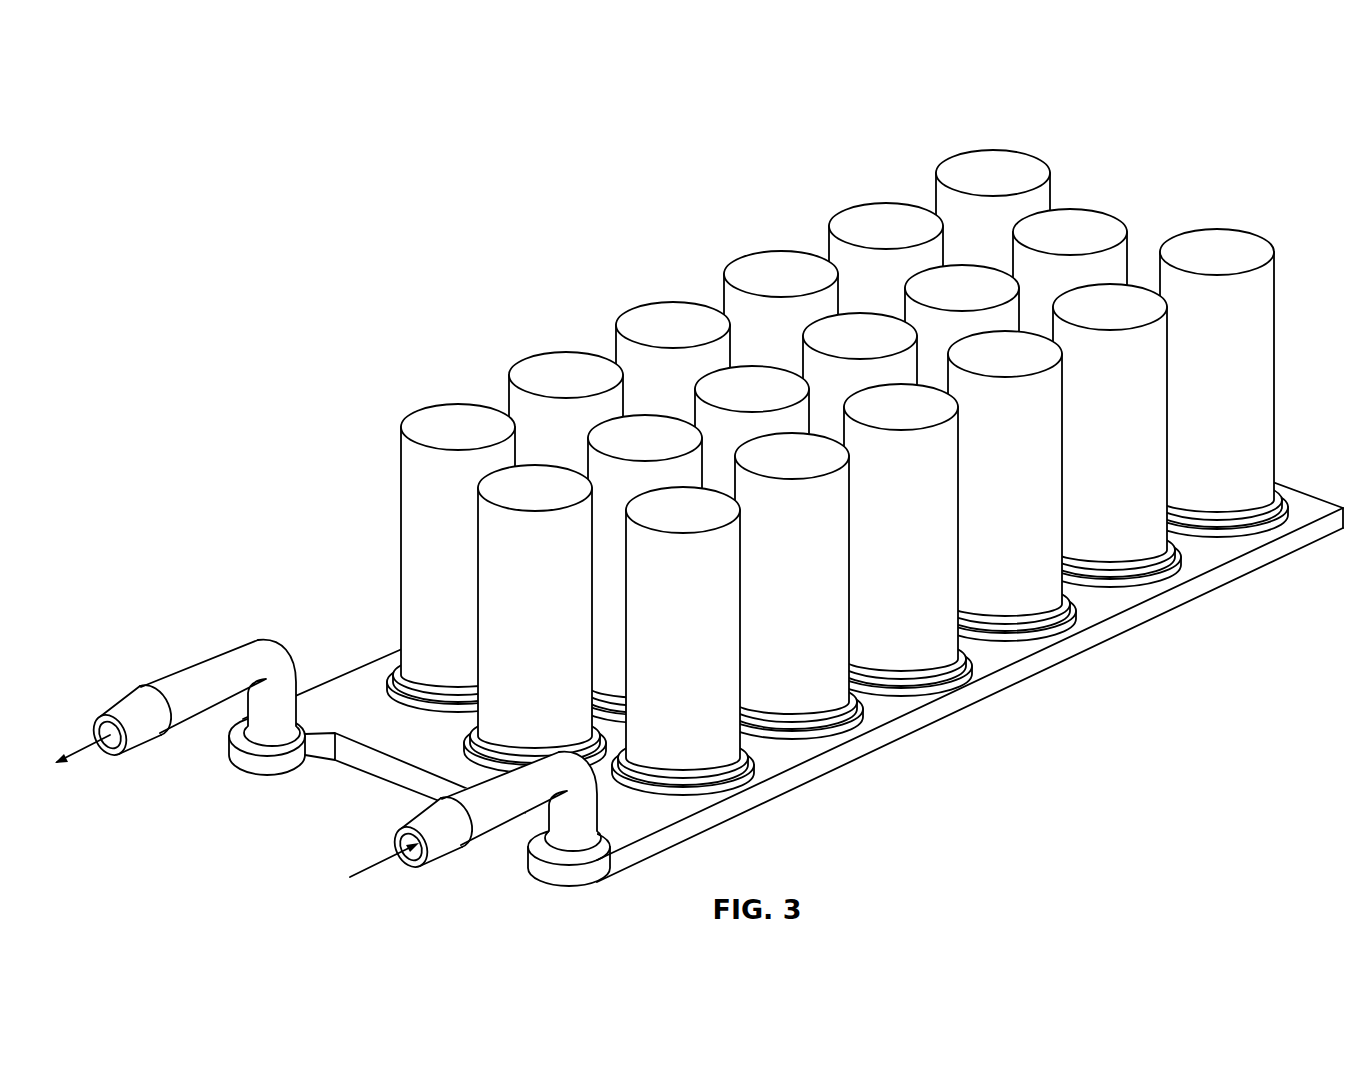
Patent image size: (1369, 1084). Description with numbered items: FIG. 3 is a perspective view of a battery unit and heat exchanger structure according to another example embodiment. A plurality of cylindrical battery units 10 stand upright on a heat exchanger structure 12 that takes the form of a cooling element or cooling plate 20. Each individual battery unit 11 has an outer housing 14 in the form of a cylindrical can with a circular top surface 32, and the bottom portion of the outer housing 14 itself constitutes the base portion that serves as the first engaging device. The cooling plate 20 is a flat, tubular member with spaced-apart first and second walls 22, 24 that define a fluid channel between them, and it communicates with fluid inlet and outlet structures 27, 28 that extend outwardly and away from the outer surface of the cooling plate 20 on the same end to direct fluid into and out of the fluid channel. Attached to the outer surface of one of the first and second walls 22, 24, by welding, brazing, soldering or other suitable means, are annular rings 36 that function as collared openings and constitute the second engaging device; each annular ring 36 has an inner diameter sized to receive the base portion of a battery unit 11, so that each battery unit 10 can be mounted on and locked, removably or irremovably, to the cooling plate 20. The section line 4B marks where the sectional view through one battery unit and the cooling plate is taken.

The battery unit 10 is at (706, 497).
The battery unit 11 is at (811, 479).
The heat exchanger structure 12 is at (793, 652).
The outer housing 14 is at (772, 594).
The cooling plate 20 is at (862, 750).
The first wall 22 is at (1312, 500).
The second wall 24 is at (1323, 542).
The fluid inlet structure 27 is at (485, 840).
The fluid outlet structure 28 is at (196, 666).
The top surface 32 is at (433, 442).
The annular ring 36 is at (1250, 527).
The section line 4B is at (439, 800).